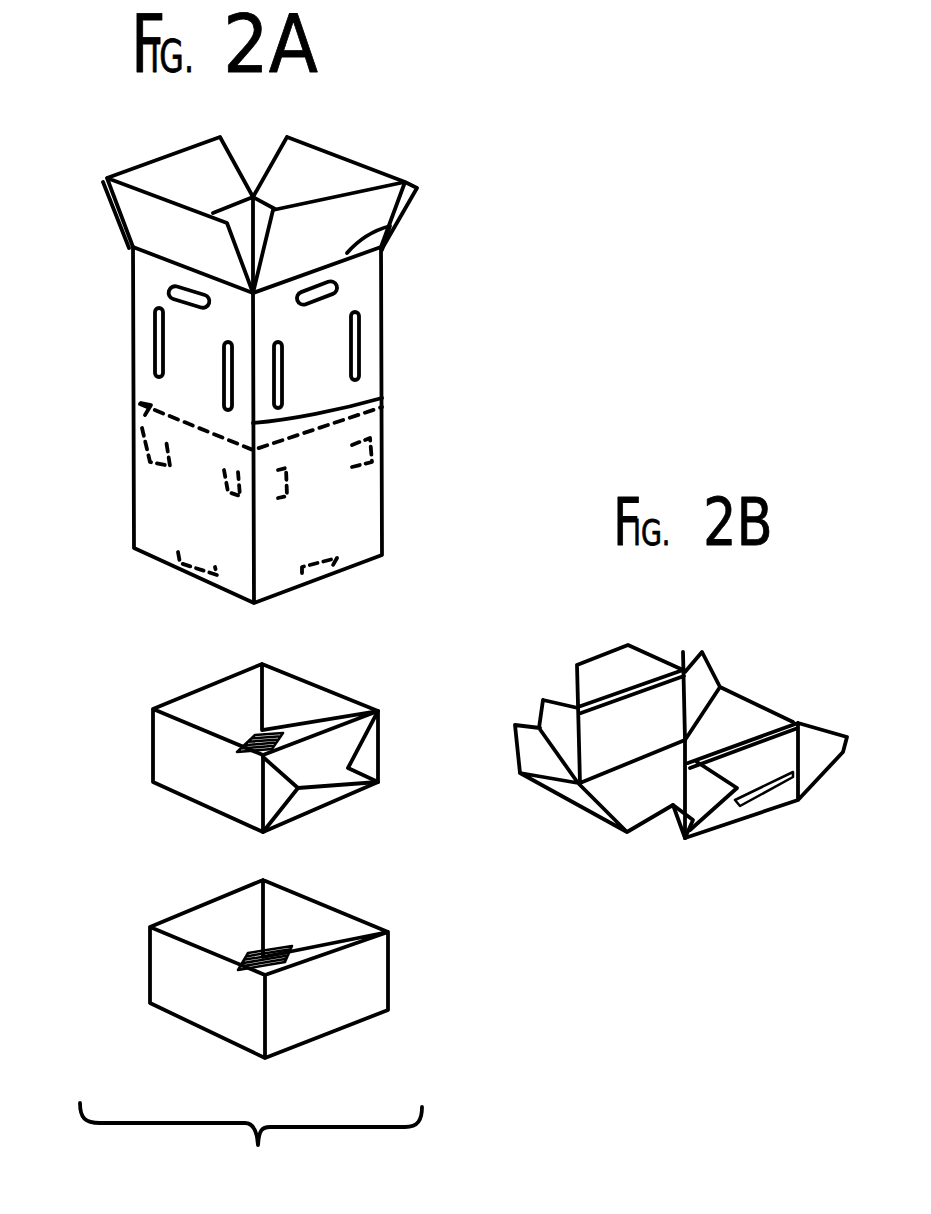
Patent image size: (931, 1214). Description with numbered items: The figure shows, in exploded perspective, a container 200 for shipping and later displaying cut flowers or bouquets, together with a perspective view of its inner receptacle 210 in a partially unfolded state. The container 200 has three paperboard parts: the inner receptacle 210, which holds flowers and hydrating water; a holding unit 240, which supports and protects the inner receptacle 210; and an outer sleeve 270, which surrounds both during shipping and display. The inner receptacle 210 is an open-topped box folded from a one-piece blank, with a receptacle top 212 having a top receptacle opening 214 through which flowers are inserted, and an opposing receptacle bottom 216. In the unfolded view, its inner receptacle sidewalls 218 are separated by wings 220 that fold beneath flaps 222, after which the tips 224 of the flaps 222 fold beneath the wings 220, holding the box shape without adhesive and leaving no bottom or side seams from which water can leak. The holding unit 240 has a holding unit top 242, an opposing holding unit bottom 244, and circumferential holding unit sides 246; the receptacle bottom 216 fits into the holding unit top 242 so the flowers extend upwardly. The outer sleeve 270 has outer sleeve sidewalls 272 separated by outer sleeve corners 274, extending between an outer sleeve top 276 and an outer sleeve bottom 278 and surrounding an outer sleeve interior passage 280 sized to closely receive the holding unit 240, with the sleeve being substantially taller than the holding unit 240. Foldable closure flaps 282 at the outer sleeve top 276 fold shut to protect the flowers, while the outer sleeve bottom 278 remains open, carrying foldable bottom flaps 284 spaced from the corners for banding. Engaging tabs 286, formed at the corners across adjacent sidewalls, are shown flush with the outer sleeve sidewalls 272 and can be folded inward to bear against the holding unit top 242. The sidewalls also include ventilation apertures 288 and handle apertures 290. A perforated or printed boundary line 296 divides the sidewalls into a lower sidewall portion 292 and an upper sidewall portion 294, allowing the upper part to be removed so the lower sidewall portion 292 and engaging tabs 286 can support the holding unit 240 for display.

In FIG. 2A, the container 200 is at (251, 1154).
In FIG. 2A, the inner receptacle 210 is at (312, 685).
In FIG. 2A, the receptacle top 212 is at (208, 683).
In FIG. 2A, the top receptacle opening 214 is at (190, 705).
In FIG. 2A, the receptacle bottom 216 is at (250, 751).
In FIG. 2A, the inner receptacle sidewalls 218 is at (207, 772).
In FIG. 2B, the inner receptacle sidewalls 218 is at (740, 715).
In FIG. 2A, the wings 220 is at (366, 760).
In FIG. 2B, the wings 220 is at (672, 825).
In FIG. 2A, the flaps 222 is at (328, 762).
In FIG. 2B, the flaps 222 is at (780, 758).
In FIG. 2B, the tips 224 is at (767, 795).
In FIG. 2A, the holding unit 240 is at (375, 974).
In FIG. 2A, the holding unit top 242 is at (340, 908).
In FIG. 2A, the holding unit bottom 244 is at (258, 957).
In FIG. 2A, the holding unit sides 246 is at (203, 928).
In FIG. 2A, the outer sleeve 270 is at (373, 289).
In FIG. 2A, the outer sleeve sidewalls 272 is at (150, 298).
In FIG. 2A, the outer sleeve corners 274 is at (362, 398).
In FIG. 2A, the outer sleeve top 276 is at (395, 229).
In FIG. 2A, the outer sleeve bottom 278 is at (362, 560).
In FIG. 2A, the outer sleeve interior passage 280 is at (270, 212).
In FIG. 2A, the closure flaps 282 is at (170, 178).
In FIG. 2A, the bottom flaps 284 is at (327, 563).
In FIG. 2A, the engaging tabs 286 is at (365, 453).
In FIG. 2A, the ventilation apertures 288 is at (362, 334).
In FIG. 2A, the handle apertures 290 is at (193, 306).
In FIG. 2A, the lower sidewall portion 292 is at (165, 488).
In FIG. 2A, the upper sidewall portion 294 is at (178, 377).
In FIG. 2A, the boundary line 296 is at (148, 416).